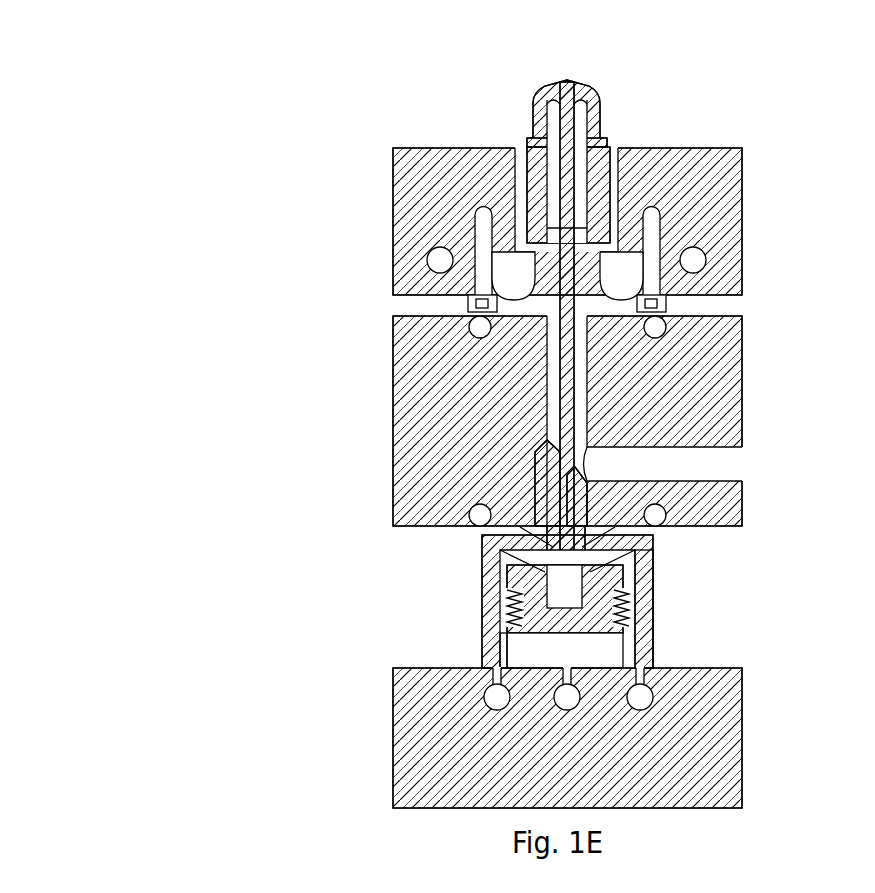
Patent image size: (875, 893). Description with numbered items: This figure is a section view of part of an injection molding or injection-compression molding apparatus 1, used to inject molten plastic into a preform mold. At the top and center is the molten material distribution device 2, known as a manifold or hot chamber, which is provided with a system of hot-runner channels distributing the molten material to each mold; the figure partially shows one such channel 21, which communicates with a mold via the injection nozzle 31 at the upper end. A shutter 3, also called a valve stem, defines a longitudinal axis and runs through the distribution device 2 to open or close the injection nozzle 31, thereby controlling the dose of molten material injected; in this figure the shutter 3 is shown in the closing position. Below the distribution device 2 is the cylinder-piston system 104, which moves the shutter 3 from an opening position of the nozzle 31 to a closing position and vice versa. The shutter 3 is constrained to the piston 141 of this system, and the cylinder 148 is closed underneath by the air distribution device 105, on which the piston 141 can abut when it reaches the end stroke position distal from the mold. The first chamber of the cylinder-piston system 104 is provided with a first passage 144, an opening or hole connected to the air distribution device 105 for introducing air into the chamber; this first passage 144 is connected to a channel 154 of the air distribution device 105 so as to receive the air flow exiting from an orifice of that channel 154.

The injection molding or injection-compression molding apparatus 1 is at (345, 198).
The molten material distribution device 2 is at (437, 378).
The shutter 3 is at (567, 502).
The channel 21 is at (703, 463).
The injection nozzle 31 is at (580, 82).
The cylinder-piston system 104 is at (448, 619).
The air distribution device 105 is at (408, 738).
The piston 141 is at (588, 605).
The first passage 144 is at (498, 662).
The cylinder 148 is at (650, 650).
The channel 154 is at (498, 695).